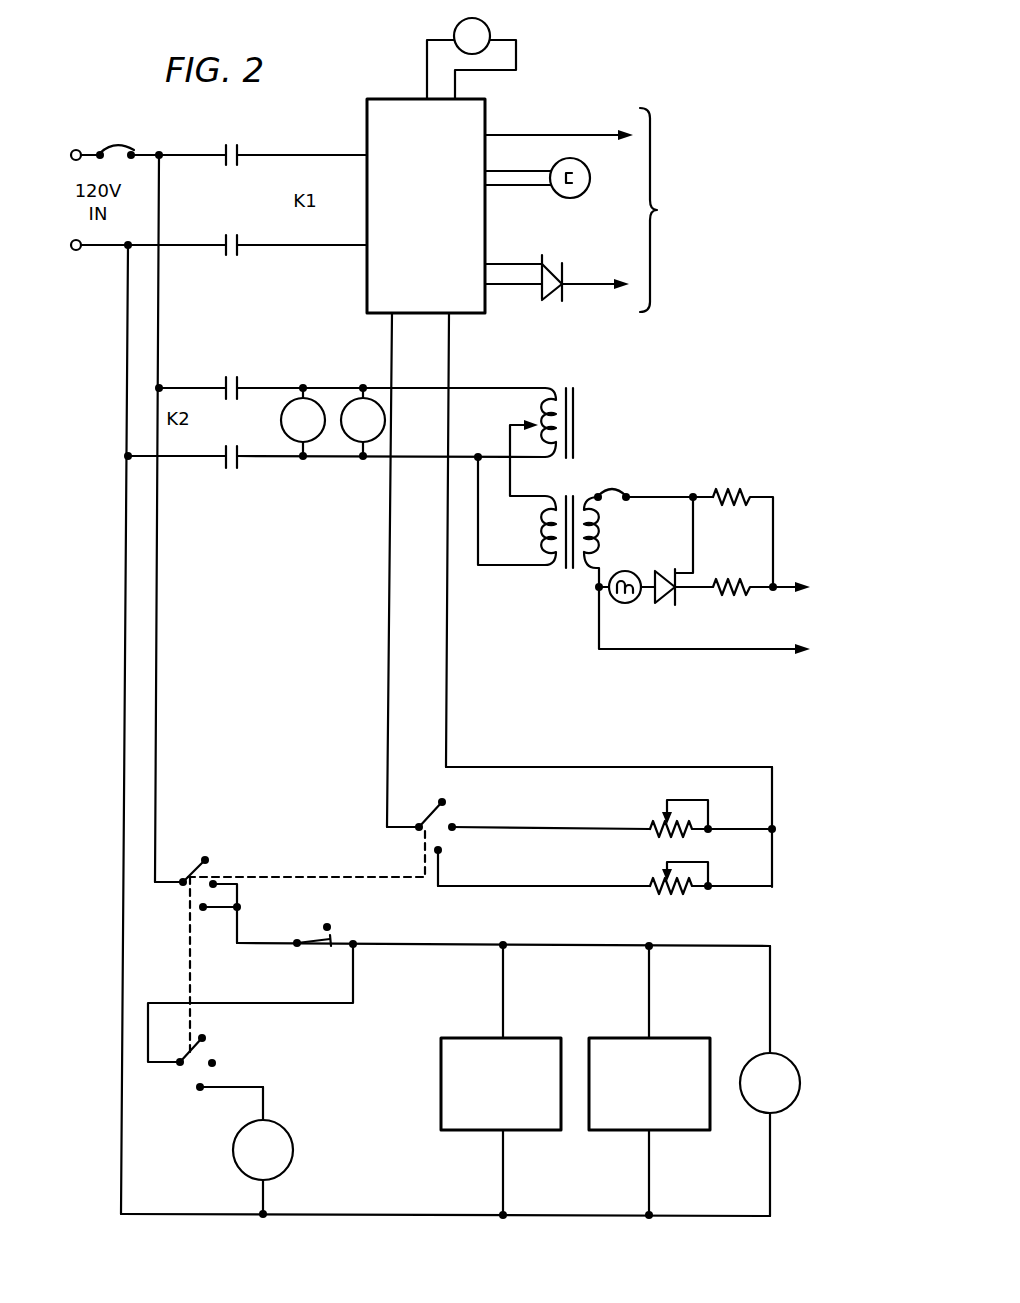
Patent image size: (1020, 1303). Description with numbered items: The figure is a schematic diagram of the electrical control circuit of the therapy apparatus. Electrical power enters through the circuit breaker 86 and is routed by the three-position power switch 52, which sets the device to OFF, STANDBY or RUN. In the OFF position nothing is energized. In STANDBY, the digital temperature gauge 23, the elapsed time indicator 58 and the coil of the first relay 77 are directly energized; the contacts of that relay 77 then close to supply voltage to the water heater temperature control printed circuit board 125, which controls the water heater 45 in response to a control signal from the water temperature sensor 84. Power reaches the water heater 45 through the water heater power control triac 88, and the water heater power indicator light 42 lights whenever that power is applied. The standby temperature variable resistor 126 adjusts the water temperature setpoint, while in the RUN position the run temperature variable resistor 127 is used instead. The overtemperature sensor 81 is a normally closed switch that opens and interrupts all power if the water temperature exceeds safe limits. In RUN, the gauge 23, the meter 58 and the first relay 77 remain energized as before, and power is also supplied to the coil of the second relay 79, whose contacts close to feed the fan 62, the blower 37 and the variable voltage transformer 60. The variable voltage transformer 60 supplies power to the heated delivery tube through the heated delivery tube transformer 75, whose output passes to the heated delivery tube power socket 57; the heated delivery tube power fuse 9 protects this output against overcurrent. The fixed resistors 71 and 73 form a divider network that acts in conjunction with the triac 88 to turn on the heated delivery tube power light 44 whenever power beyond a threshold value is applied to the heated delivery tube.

The circuit breaker 86 is at (117, 144).
The relay K1 77 is at (231, 160).
The water heater temperature control printed circuit board 125 is at (399, 229).
The water temperature sensor 84 is at (453, 34).
The water heater 45 is at (717, 192).
The water heater power indicator light 42 is at (590, 190).
The relay K2 79 is at (237, 393).
The fan 62 is at (315, 398).
The blower 37 is at (372, 398).
The variable voltage transformer 60 is at (577, 420).
The heated delivery tube transformer 75 is at (572, 495).
The heated delivery tube power fuse 9 is at (612, 490).
The fixed resistor 71 is at (733, 493).
The fixed resistor 73 is at (735, 580).
The water heater power control triac 88 is at (664, 568).
The heated delivery tube power light 44 is at (640, 600).
The heated delivery tube power socket 57 is at (836, 625).
The 3-position power switch 52 is at (188, 868).
The overtemperature sensor 81 is at (332, 934).
The standby temperature variable resistor 126 is at (690, 798).
The run temperature variable resistor 127 is at (690, 858).
The elapsed time indicator 58 is at (484, 1104).
The digital temperature gauge 23 is at (632, 1104).